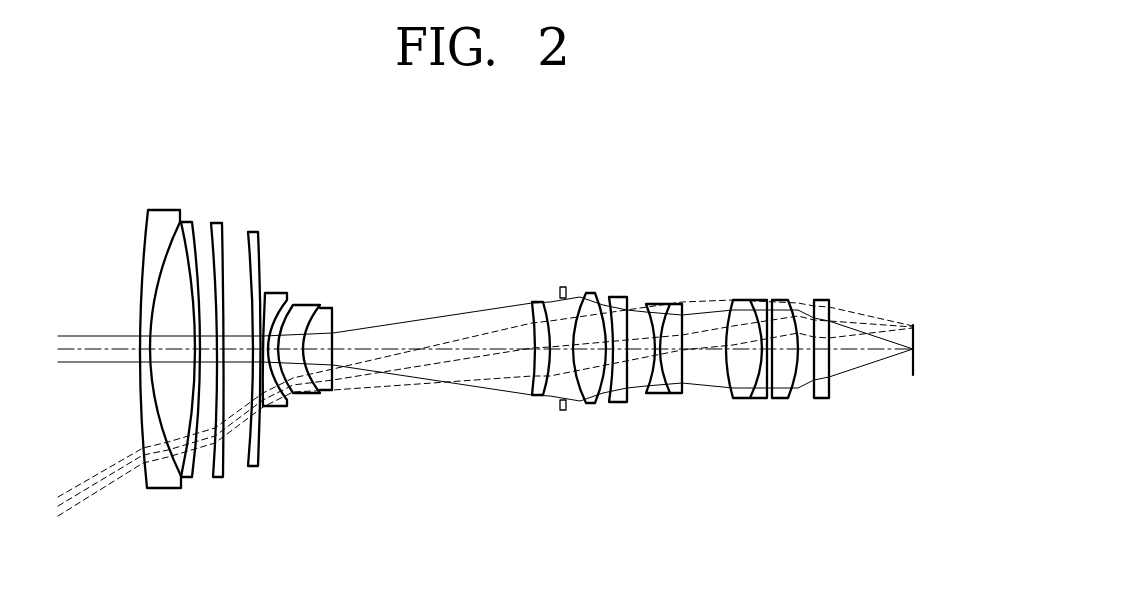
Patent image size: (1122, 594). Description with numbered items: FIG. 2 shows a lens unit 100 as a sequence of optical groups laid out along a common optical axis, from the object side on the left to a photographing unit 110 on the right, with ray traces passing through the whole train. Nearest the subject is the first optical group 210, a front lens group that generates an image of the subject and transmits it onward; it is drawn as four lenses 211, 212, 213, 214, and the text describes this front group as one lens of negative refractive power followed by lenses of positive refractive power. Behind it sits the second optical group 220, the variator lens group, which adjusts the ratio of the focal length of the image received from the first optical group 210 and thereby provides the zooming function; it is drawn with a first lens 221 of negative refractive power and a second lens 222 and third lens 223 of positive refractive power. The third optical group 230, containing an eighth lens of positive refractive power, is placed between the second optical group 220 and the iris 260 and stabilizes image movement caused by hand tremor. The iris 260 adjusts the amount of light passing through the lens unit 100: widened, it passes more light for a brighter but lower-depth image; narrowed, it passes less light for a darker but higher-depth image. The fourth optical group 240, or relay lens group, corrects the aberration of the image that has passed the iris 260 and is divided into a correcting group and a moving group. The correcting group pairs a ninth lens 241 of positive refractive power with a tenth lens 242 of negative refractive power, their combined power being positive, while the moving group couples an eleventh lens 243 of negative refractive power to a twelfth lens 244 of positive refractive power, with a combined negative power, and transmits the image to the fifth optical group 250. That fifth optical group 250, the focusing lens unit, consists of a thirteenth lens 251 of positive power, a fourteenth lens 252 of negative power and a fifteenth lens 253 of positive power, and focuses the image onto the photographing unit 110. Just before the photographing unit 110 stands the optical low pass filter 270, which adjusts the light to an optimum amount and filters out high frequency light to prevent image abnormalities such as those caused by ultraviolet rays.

The lens unit 100 is at (482, 158).
The photographing unit 110 is at (913, 322).
The first optical group 210 is at (150, 204).
The first lens of first lens group 211 is at (162, 489).
The second lens of first lens group 212 is at (187, 478).
The third lens of first lens group 213 is at (218, 478).
The fourth lens of first lens group 214 is at (257, 467).
The second optical group 220 is at (265, 413).
The first lens 221 is at (279, 292).
The second lens 222 is at (307, 304).
The third lens 223 is at (327, 306).
The third optical group 230 is at (535, 397).
The fourth optical group 240 is at (680, 289).
The ninth lens 241 is at (590, 404).
The tenth lens 242 is at (618, 403).
The eleventh lens 243 is at (648, 394).
The twelfth lens 244 is at (677, 394).
The fifth optical group 250 is at (732, 406).
The thirteenth lens 251 is at (737, 297).
The fourteenth lens 252 is at (760, 297).
The fifteenth lens 253 is at (779, 297).
The iris 260 is at (560, 287).
The optical low pass filter 270 is at (822, 297).